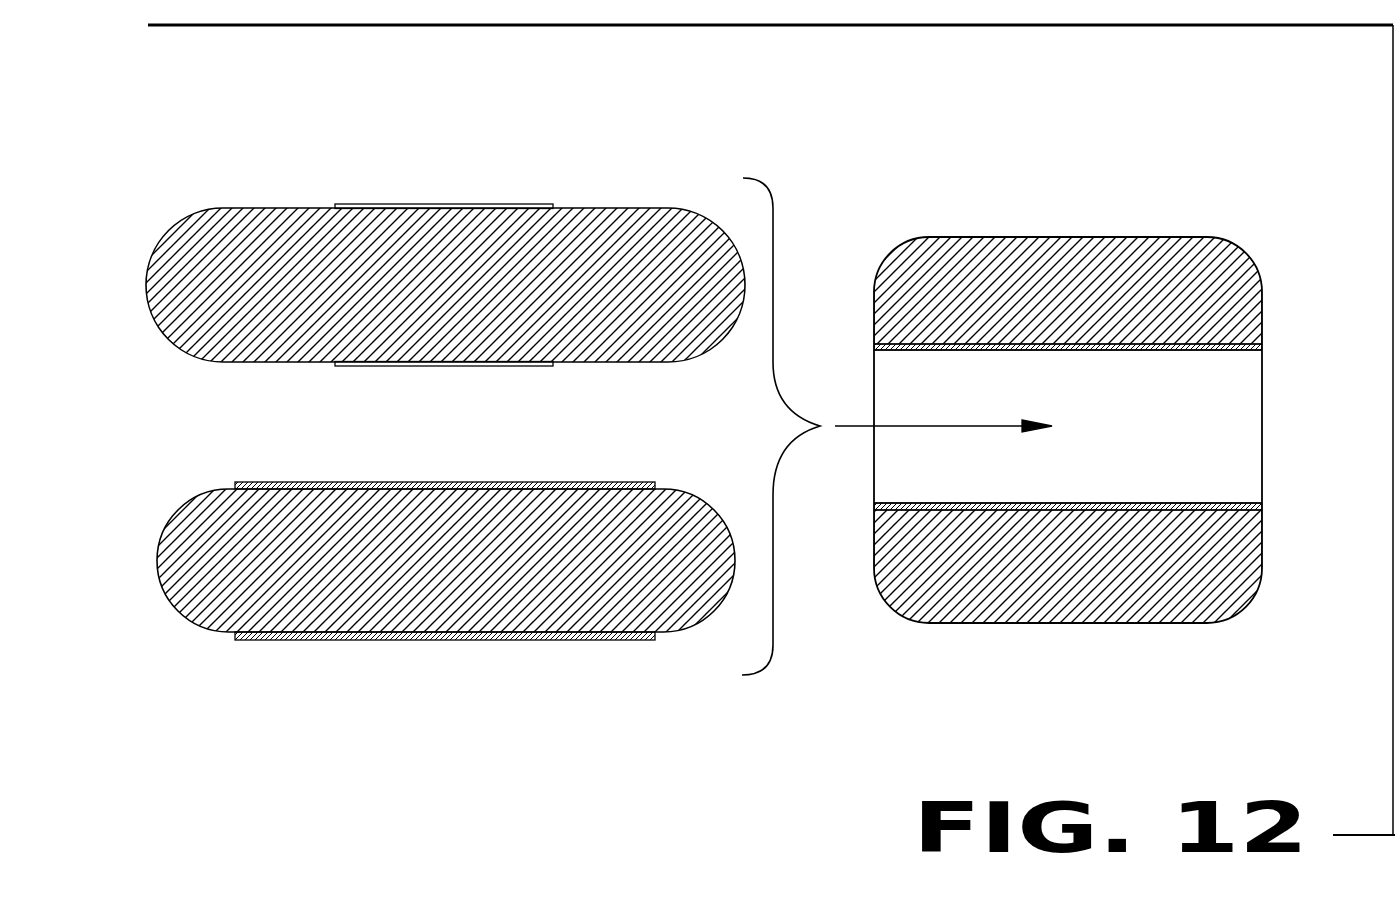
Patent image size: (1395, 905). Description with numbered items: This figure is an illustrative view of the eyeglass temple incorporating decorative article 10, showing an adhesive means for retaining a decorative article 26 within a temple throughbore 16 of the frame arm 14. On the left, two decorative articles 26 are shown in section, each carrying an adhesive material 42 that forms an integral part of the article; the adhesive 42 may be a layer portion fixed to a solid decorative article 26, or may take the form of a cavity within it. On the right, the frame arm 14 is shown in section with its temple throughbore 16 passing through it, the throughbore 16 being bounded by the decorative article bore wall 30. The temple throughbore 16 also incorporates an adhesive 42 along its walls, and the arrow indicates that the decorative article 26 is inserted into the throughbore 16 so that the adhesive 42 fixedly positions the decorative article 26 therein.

The eyeglass temple incorporating decorative article 10 is at (1096, 333).
The frame arm 14 is at (970, 247).
The aperture bore 16 is at (1218, 396).
The decorative article 26 is at (232, 222).
The decorative article bore wall 30 is at (913, 460).
The adhesive 42 is at (520, 208).